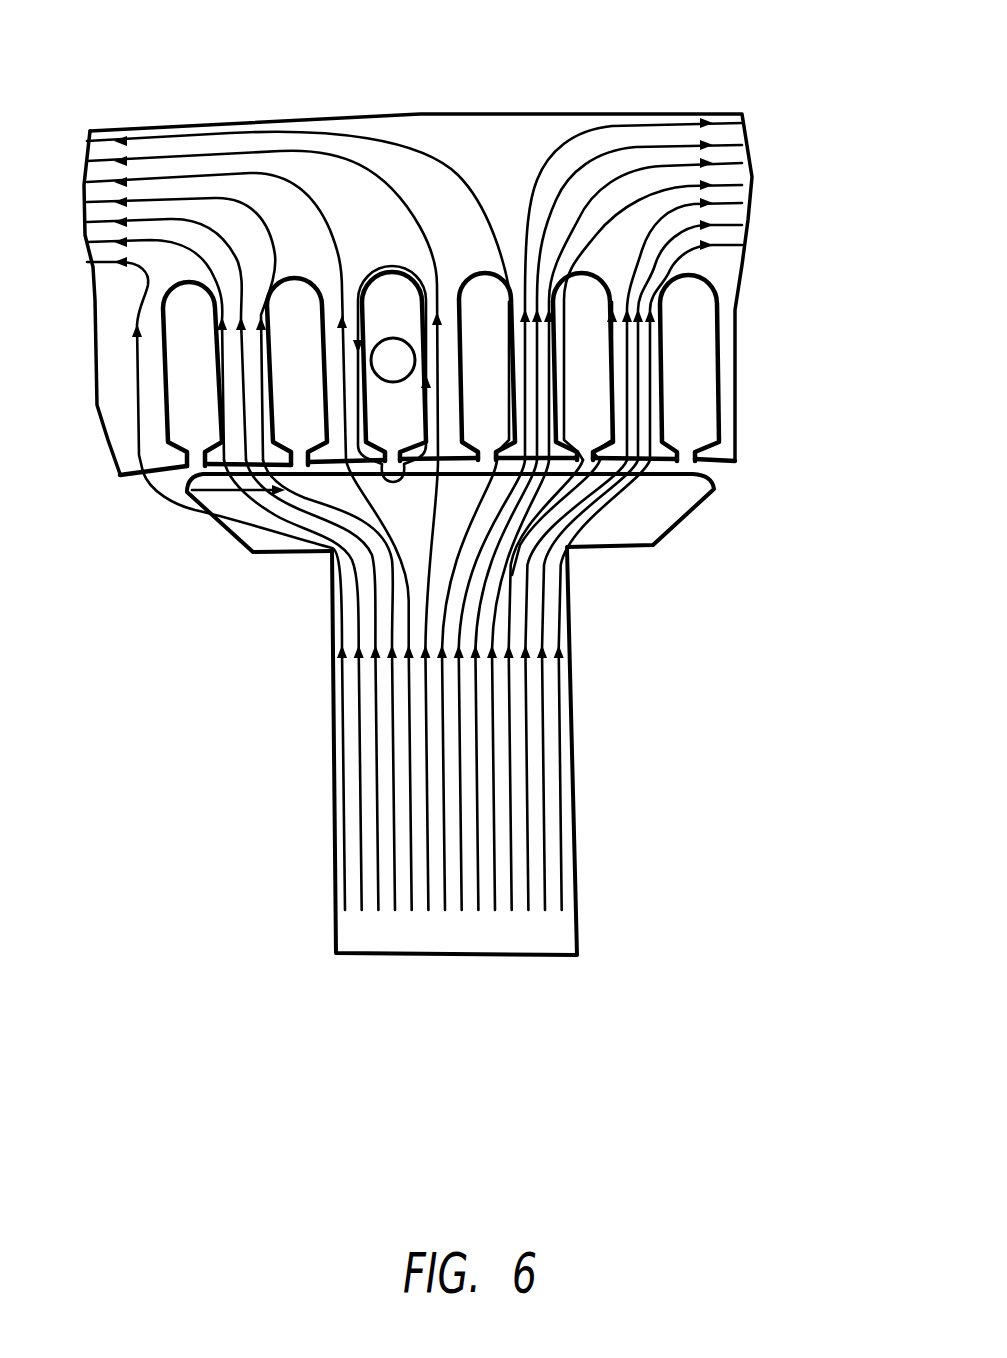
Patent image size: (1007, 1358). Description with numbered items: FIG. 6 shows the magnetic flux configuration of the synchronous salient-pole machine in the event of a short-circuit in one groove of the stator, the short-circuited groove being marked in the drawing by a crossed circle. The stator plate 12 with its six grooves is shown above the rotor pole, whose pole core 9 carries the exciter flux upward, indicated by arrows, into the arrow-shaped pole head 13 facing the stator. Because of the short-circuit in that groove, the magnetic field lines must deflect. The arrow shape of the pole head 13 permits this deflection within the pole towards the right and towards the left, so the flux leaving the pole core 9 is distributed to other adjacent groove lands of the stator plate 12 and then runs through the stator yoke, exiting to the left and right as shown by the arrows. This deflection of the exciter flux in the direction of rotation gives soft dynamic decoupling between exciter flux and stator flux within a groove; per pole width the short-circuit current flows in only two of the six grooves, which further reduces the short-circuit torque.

The stator plate 12 is at (498, 128).
The pole head 13 is at (672, 513).
The pole core 9 is at (568, 713).